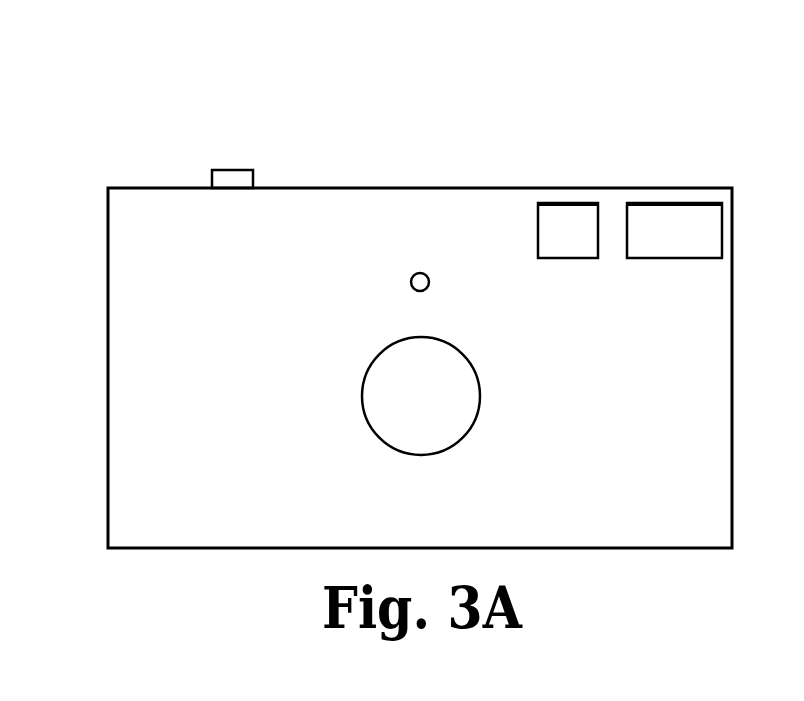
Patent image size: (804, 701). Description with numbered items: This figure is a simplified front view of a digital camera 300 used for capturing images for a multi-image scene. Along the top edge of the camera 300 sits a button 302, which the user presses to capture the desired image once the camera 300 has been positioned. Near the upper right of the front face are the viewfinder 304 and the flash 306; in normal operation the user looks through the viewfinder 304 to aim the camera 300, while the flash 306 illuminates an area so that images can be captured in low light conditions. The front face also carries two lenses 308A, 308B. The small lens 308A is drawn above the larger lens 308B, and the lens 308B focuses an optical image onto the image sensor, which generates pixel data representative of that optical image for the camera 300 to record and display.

The digital camera 300 is at (178, 90).
The button 302 is at (233, 170).
The viewfinder 304 is at (568, 203).
The flash 306 is at (675, 203).
The lens 308A is at (420, 272).
The lens 308B is at (380, 355).